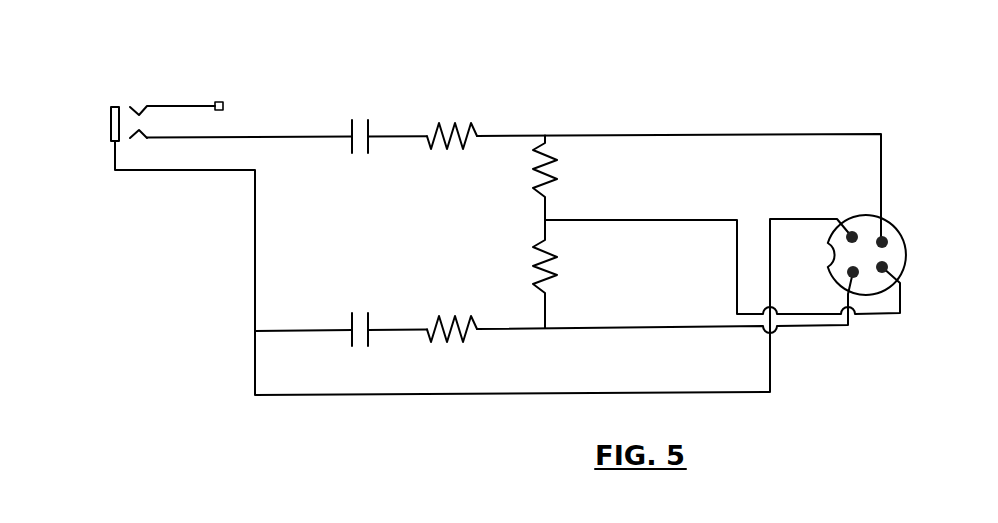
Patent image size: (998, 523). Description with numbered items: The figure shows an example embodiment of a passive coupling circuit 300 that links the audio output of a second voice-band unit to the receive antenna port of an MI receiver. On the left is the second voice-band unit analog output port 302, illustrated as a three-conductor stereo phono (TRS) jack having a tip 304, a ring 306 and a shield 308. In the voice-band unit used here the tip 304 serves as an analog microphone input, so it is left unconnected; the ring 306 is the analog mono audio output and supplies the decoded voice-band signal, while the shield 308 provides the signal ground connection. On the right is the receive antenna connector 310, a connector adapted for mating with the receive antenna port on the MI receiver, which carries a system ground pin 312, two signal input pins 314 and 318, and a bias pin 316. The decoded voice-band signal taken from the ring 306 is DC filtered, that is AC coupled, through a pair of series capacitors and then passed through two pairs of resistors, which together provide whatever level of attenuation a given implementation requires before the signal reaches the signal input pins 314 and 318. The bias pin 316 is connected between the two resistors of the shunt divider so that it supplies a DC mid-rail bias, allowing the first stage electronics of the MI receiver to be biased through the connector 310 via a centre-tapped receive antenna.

The passive coupling circuit 300 is at (150, 311).
The second voice-band unit analog output port 302 is at (143, 114).
The tip 304 is at (155, 102).
The ring 306 is at (160, 140).
The shield 308 is at (110, 125).
The receive antenna connector 310 is at (908, 263).
The system ground pin 312 is at (853, 231).
The signal input pin 314 is at (884, 236).
The bias pin 316 is at (890, 266).
The signal input pin 318 is at (858, 278).